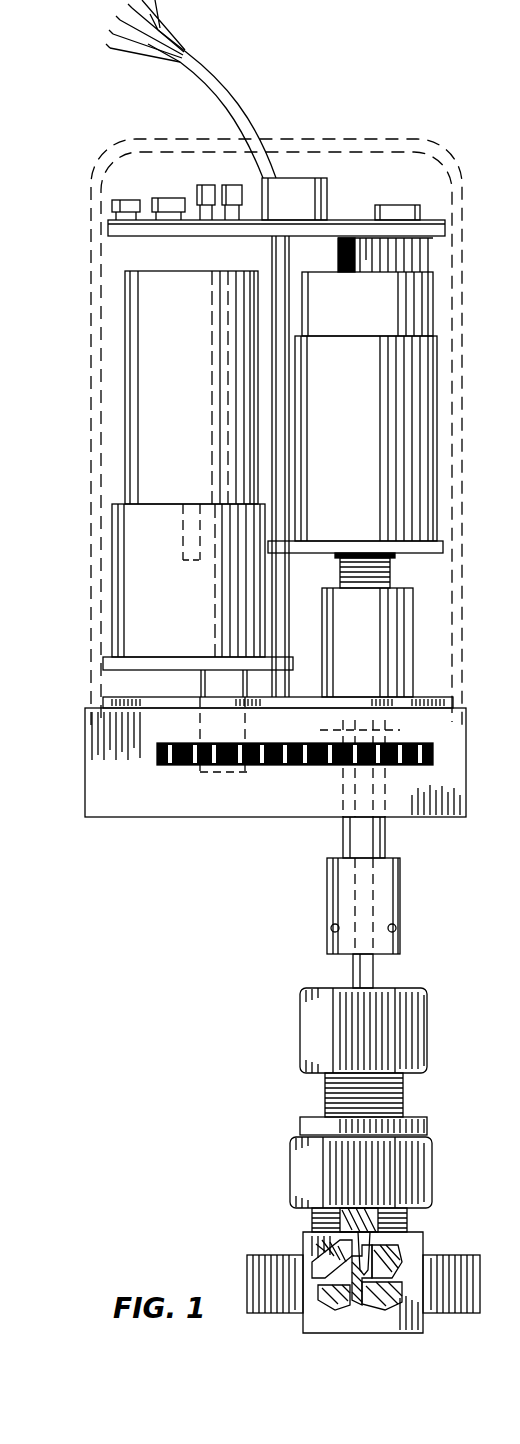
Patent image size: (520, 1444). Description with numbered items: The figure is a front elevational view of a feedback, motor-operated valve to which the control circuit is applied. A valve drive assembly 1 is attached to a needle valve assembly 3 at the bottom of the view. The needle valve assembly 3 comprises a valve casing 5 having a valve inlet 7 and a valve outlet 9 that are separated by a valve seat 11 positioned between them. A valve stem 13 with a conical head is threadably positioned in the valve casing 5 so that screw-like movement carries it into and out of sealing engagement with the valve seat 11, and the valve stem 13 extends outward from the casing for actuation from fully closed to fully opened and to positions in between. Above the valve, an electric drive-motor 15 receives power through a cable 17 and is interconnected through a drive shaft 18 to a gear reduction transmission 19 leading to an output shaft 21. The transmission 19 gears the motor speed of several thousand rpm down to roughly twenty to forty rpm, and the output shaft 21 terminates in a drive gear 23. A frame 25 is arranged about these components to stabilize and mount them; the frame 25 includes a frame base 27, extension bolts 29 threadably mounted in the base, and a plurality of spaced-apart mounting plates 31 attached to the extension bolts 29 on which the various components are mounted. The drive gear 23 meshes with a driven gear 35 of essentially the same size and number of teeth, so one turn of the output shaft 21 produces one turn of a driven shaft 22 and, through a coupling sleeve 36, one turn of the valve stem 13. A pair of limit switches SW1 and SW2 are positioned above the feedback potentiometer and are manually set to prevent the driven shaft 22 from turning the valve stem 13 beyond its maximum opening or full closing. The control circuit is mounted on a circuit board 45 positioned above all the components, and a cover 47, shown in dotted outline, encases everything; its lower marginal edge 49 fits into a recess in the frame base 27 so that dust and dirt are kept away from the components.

The valve drive assembly 1 is at (62, 470).
The needle valve assembly 3 is at (287, 1125).
The valve casing 5 is at (420, 1323).
The valve inlet 7 is at (252, 1260).
The valve outlet 9 is at (467, 1258).
The valve seat 11 is at (407, 1250).
The valve stem 13 is at (367, 1183).
The electric drive-motor 15 is at (160, 375).
The cable 17 is at (227, 99).
The drive shaft 18 is at (187, 530).
The gear reduction transmission 19 is at (152, 608).
The output shaft 21 is at (175, 697).
The driven shaft 22 is at (367, 838).
The drive gear 23 is at (175, 760).
The frame 25 is at (254, 697).
The frame base 27 is at (450, 750).
The extension bolts 29 is at (282, 598).
The mounting plates 31 is at (103, 662).
The driven gear 35 is at (321, 765).
The coupling sleeve 36 is at (383, 890).
The circuit board 45 is at (118, 226).
The cover 47 is at (140, 142).
The lower marginal edge 49 is at (454, 708).
The limit switch SW1 is at (297, 190).
The limit switch SW2 is at (390, 205).